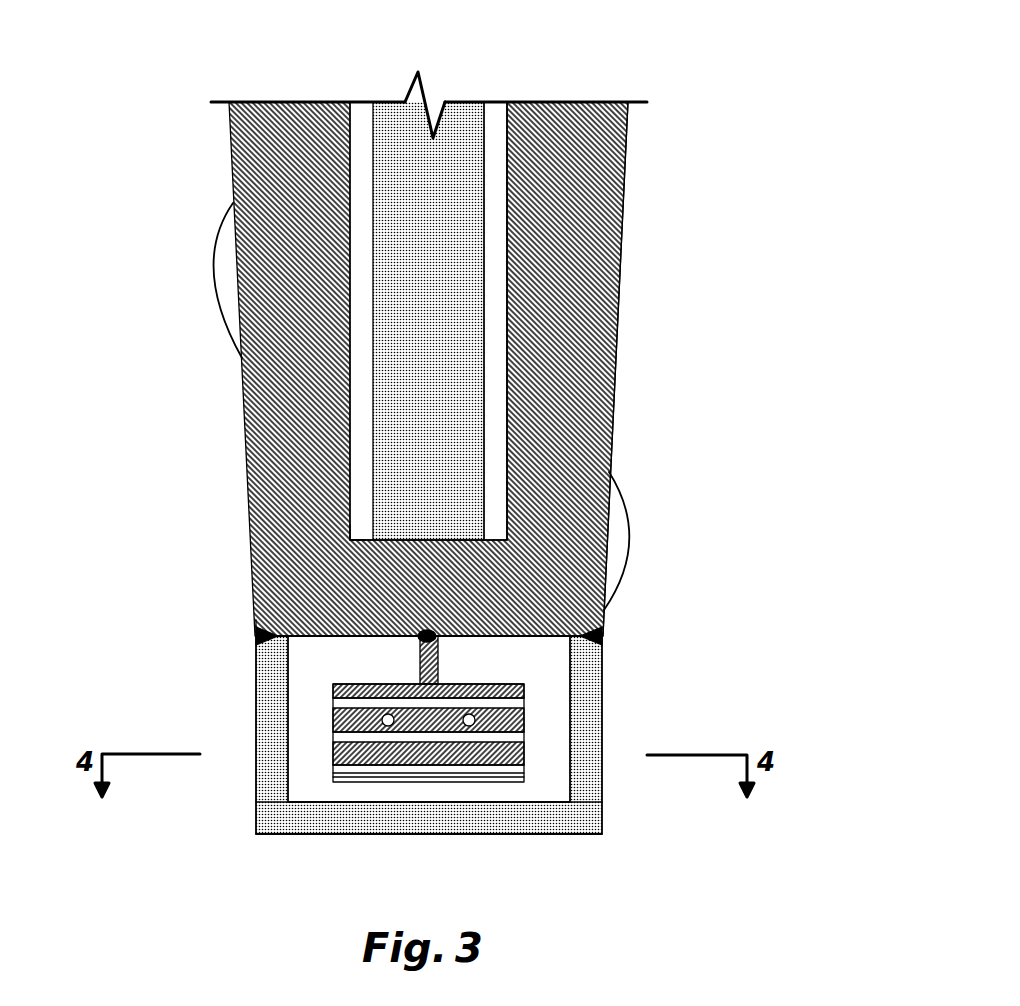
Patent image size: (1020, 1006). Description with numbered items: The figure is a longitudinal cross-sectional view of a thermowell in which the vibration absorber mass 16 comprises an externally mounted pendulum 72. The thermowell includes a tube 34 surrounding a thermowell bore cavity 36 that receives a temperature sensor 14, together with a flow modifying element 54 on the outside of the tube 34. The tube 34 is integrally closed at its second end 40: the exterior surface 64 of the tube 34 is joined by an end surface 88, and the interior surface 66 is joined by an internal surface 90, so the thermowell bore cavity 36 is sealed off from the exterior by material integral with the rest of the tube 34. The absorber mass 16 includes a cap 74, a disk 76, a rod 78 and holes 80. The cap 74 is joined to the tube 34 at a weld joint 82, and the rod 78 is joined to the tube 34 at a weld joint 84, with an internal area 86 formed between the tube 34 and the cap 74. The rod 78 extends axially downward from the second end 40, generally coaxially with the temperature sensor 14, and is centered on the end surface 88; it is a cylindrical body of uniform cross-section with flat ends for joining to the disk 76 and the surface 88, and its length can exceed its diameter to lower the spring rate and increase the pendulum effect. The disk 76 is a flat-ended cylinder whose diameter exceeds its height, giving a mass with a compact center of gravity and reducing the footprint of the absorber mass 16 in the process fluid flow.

The temperature sensor 14 is at (468, 96).
The vibration absorber mass 16 is at (250, 838).
The tube 34 is at (586, 228).
The thermowell bore cavity 36 is at (497, 312).
The second end 40 is at (190, 606).
The flow modifying element 54 is at (215, 266).
The exterior surface 64 is at (616, 357).
The interior surface 66 is at (503, 187).
The externally mounted pendulum 72 is at (324, 716).
The cap 74 is at (547, 820).
The disk 76 is at (343, 750).
The rod 78 is at (430, 667).
The holes 80 is at (517, 769).
The weld joint 82 is at (256, 636).
The weld joint 84 is at (430, 636).
The internal area 86 is at (540, 676).
The end surface 88 is at (317, 638).
The internal surface 90 is at (367, 538).